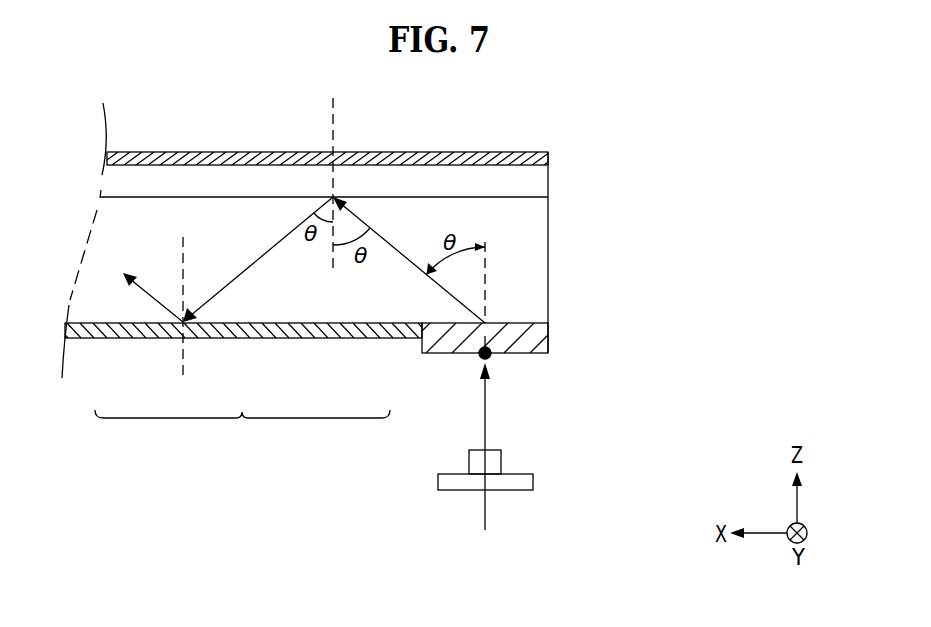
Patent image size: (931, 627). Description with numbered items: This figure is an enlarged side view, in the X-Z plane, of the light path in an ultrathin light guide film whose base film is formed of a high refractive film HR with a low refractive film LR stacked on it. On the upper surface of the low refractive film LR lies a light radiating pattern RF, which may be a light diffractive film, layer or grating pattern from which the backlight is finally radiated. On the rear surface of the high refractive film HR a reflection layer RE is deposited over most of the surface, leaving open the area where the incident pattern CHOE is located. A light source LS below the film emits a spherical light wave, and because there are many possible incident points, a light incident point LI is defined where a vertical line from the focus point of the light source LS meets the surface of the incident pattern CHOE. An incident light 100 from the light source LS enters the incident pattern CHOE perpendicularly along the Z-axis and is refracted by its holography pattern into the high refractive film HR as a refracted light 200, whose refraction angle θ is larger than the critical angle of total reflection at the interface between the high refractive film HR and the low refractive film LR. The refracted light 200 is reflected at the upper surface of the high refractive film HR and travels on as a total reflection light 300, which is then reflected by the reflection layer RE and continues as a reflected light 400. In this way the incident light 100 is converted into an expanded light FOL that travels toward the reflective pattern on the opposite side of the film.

The light radiating pattern RF is at (527, 160).
The low refractive film LR is at (527, 187).
The high refractive film HR is at (527, 251).
The incident pattern CHOE is at (538, 337).
The reflection layer RE is at (163, 332).
The refracted light 200 is at (410, 261).
The total reflection light 300 is at (260, 258).
The reflected light 400 is at (155, 299).
The expanded light FOL is at (242, 430).
The light incident point LI is at (479, 357).
The incident light 100 is at (485, 422).
The light source LS is at (492, 463).